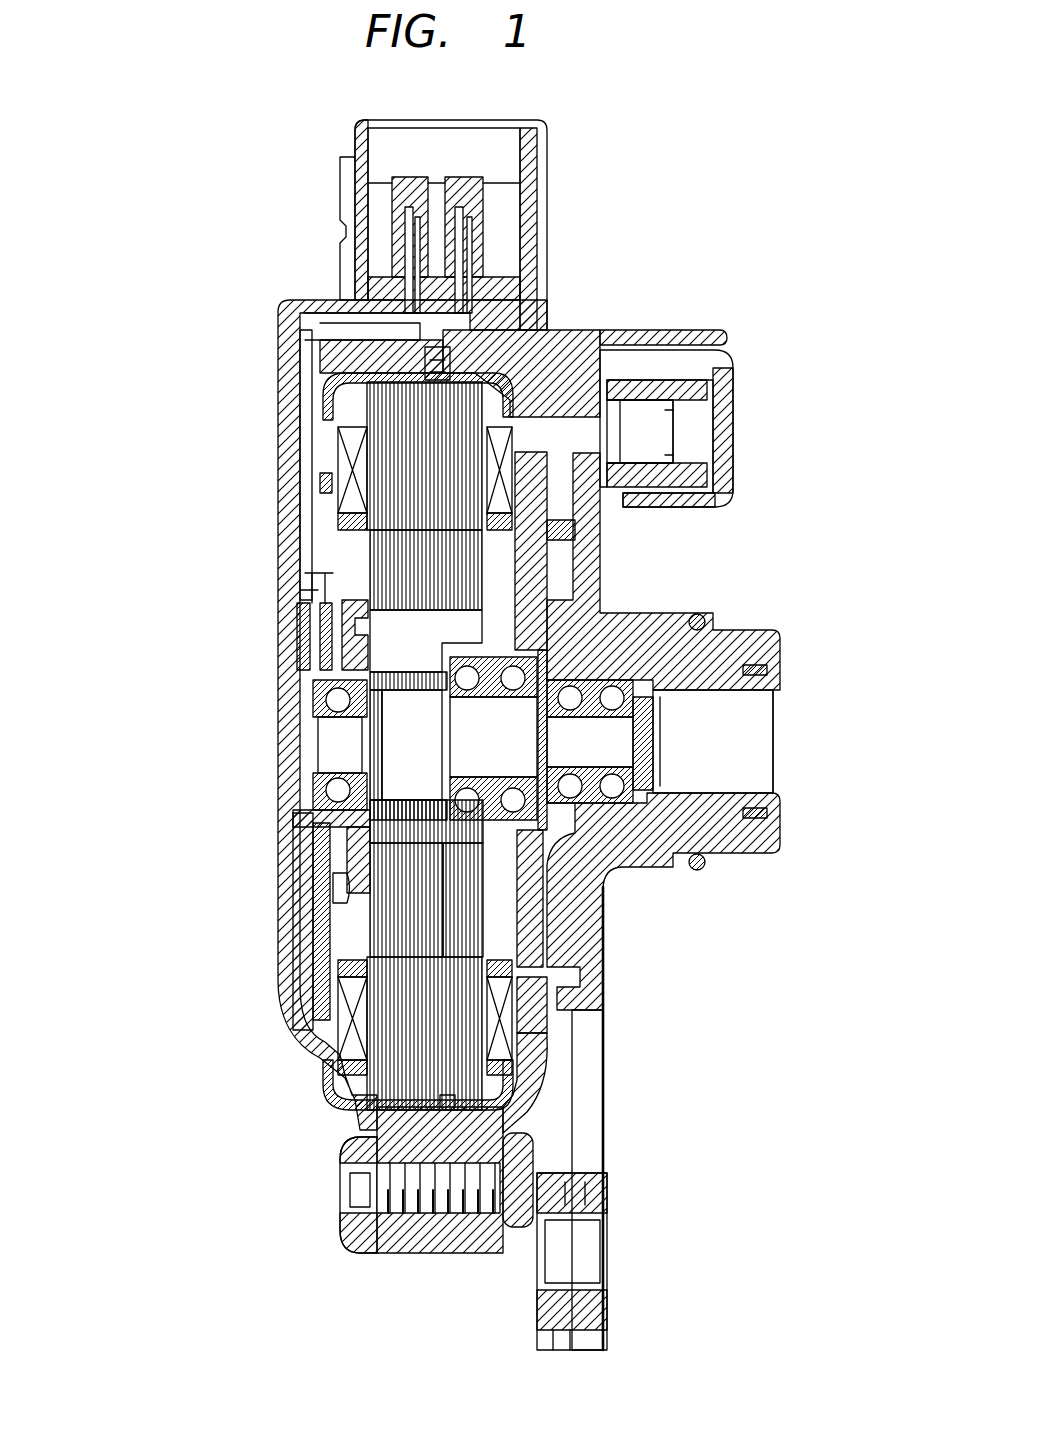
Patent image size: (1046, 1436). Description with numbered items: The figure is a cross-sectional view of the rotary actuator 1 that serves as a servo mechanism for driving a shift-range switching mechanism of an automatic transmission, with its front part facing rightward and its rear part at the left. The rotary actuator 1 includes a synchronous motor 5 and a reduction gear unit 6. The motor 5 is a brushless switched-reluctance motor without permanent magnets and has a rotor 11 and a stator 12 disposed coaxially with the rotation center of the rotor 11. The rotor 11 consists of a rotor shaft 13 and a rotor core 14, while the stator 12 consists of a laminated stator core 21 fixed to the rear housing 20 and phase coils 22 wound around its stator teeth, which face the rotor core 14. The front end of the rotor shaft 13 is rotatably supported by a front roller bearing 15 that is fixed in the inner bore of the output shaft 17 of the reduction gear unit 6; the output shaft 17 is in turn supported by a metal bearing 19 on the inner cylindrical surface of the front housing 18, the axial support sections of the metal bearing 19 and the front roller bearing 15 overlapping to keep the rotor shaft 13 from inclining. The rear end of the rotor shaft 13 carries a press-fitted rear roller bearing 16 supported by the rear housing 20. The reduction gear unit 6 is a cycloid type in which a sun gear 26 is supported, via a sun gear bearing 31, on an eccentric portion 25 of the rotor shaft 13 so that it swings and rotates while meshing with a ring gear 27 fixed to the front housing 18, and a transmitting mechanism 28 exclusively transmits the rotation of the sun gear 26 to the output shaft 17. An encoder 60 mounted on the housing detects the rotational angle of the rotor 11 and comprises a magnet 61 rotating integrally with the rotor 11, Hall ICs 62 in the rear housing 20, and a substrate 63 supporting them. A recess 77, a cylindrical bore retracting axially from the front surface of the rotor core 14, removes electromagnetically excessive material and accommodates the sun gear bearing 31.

The rotary actuator 1 is at (232, 256).
The synchronous motor 5 is at (108, 430).
The reduction gear unit 6 is at (742, 895).
The rotor 11 is at (168, 522).
The stator 12 is at (168, 398).
The rotor shaft 13 is at (337, 645).
The rotor core 14 is at (388, 552).
The front roller bearing 15 is at (605, 658).
The rear roller bearing 16 is at (405, 710).
The output shaft 17 is at (690, 870).
The front housing 18 is at (530, 1115).
The metal bearing 19 is at (727, 625).
The rear housing 20 is at (332, 1068).
The stator core 21 is at (393, 440).
The phase coils 22 is at (345, 480).
The eccentric portion 25 is at (590, 790).
The sun gear 26 is at (560, 925).
The ring gear 27 is at (548, 990).
The transmitting mechanism 28 is at (545, 770).
The sun gear bearing 31 is at (608, 700).
The encoder 60 is at (168, 812).
The magnet 61 is at (340, 850).
The Hall ICs 62 is at (330, 895).
The substrate 63 is at (340, 938).
The recess 77 is at (522, 545).